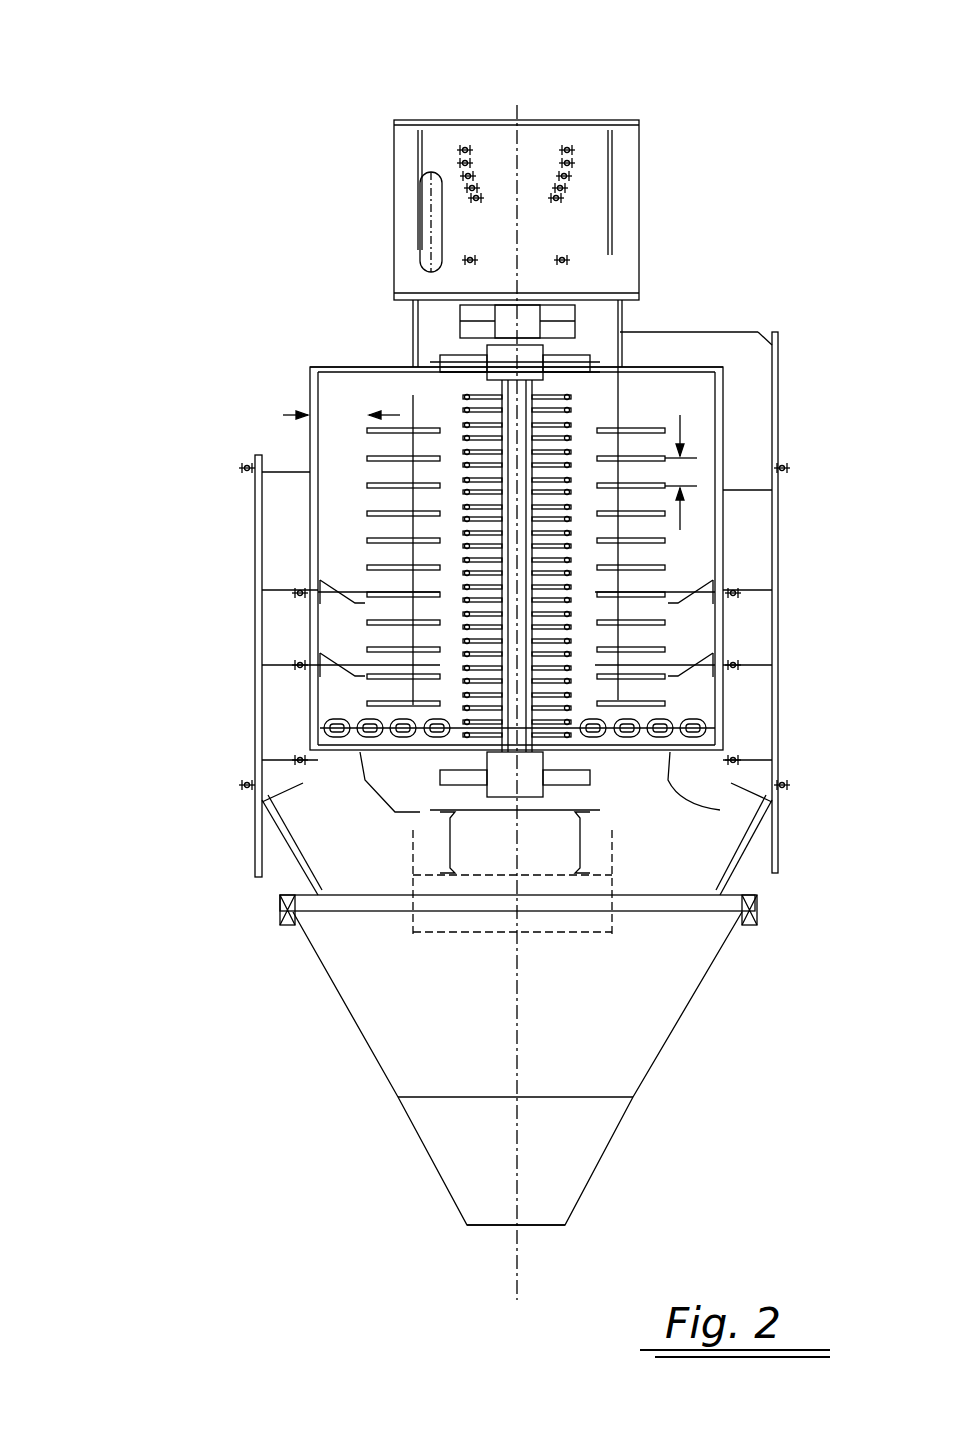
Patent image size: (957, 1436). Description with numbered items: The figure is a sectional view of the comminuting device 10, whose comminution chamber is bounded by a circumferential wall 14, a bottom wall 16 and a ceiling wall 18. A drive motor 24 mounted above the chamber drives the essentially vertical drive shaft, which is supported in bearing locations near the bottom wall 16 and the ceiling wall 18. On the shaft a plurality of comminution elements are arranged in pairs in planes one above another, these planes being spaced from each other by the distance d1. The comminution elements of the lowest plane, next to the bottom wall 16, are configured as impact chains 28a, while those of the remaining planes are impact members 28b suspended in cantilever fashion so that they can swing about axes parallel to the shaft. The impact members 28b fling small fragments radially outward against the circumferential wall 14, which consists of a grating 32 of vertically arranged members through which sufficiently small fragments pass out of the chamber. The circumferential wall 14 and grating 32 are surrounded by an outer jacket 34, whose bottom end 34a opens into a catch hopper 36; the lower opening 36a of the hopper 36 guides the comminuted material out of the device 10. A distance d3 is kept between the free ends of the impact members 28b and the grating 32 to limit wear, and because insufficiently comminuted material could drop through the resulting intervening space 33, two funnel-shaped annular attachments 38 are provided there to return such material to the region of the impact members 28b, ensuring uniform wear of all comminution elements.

The comminuting device 10 is at (125, 85).
The drive motor 24 is at (541, 135).
The ceiling wall 18 is at (665, 365).
The circumferential wall 14 is at (720, 395).
The grating 32 is at (310, 385).
The impact members 28b is at (370, 487).
The intervening space 33 is at (690, 548).
The funnel-shaped annular attachments 38 is at (720, 663).
The impact chains 28a is at (325, 731).
The outer jacket 34 is at (255, 560).
The bottom end of outer jacket 34a is at (250, 786).
The bottom wall 16 is at (768, 790).
The catch hopper 36 is at (680, 1012).
The lower opening of hopper 36a is at (487, 1227).
The distance between comminution element planes d1 is at (690, 465).
The distance between impact member free ends and circumferential wall d3 is at (333, 400).